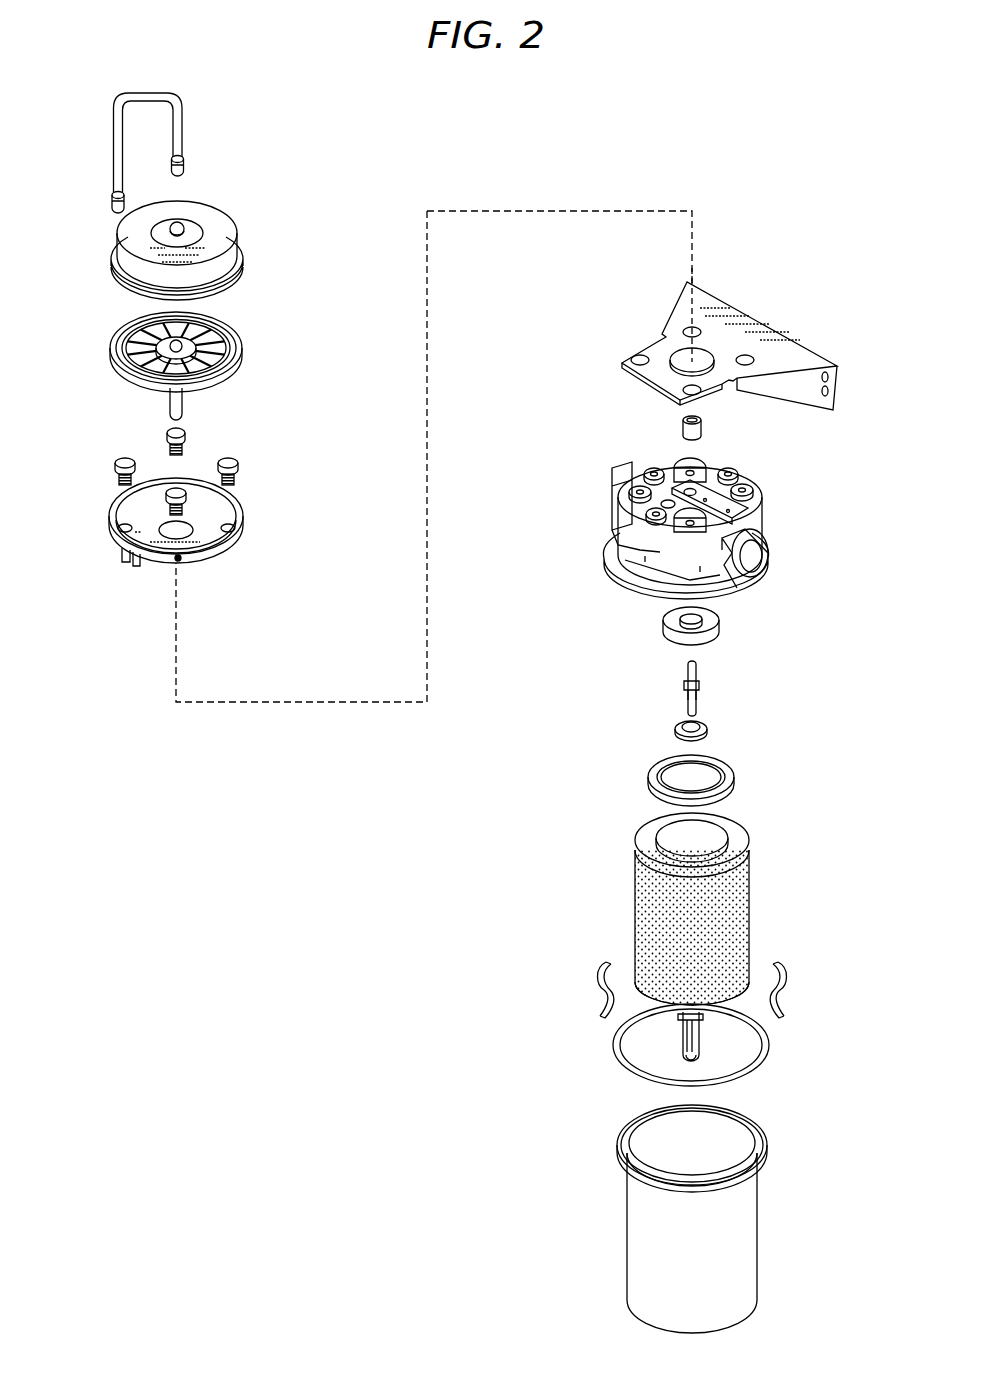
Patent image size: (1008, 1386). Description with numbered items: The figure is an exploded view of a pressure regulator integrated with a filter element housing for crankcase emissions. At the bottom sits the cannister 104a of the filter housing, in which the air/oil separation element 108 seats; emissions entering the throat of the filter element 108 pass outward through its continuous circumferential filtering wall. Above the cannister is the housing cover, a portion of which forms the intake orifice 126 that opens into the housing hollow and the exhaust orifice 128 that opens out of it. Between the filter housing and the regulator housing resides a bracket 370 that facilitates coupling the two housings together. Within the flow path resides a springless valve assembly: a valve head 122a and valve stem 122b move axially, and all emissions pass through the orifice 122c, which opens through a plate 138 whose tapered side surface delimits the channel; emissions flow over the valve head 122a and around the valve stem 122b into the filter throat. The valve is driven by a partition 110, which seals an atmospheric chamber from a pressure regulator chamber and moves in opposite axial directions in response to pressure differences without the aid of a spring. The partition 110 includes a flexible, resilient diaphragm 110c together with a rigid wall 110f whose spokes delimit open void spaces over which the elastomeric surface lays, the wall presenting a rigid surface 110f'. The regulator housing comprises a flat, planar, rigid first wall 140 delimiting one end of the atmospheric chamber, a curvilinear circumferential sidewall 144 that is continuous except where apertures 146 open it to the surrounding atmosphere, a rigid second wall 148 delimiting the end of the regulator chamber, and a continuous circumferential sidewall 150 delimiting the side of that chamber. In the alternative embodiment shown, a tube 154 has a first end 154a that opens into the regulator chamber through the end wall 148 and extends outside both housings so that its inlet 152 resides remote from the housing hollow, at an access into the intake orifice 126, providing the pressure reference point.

The cannister 104a is at (757, 1222).
The air/oil separation element 108 is at (790, 906).
The partition 110 is at (240, 392).
The diaphragm 110c is at (137, 361).
The rigid wall 110f is at (134, 326).
The rigid surface 110f' is at (213, 335).
The valve head 122a is at (716, 727).
The valve stem 122b is at (718, 673).
The orifice 122c is at (670, 618).
The intake orifice 126 is at (612, 460).
The exhaust orifice 128 is at (775, 572).
The plate 138 is at (666, 645).
The first wall 140 is at (140, 527).
The sidewall 144 is at (226, 503).
The apertures 146 is at (180, 560).
The second wall 148 is at (212, 226).
The sidewall 150 is at (244, 259).
The inlet 152 is at (113, 199).
The tube 154 is at (117, 106).
The first end 154a is at (184, 162).
The bracket 370 is at (808, 352).